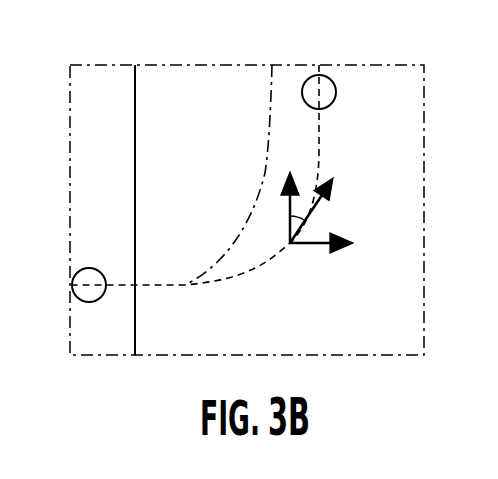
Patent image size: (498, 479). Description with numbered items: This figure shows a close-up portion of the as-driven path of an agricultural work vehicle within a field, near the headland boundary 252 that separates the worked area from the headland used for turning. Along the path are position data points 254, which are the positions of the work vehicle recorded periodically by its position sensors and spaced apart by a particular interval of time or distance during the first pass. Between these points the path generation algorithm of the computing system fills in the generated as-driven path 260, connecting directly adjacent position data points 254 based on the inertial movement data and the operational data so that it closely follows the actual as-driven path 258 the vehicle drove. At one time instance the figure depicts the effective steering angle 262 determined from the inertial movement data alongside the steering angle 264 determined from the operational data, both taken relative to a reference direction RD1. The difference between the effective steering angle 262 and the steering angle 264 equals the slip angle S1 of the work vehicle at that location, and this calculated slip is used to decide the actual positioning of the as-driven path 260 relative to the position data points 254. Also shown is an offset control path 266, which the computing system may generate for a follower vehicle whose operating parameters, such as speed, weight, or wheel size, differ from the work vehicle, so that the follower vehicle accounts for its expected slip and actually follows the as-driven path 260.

The headland boundary 252 is at (135, 167).
The position data points 254 is at (336, 94).
The actual as-driven path 258 is at (200, 203).
The as-driven path 260 is at (205, 288).
The effective steering angle 262 is at (309, 205).
The steering angle 264 is at (290, 203).
The offset control path 266 is at (263, 161).
The slip angle S1 is at (303, 215).
The reference direction RD1 is at (313, 245).